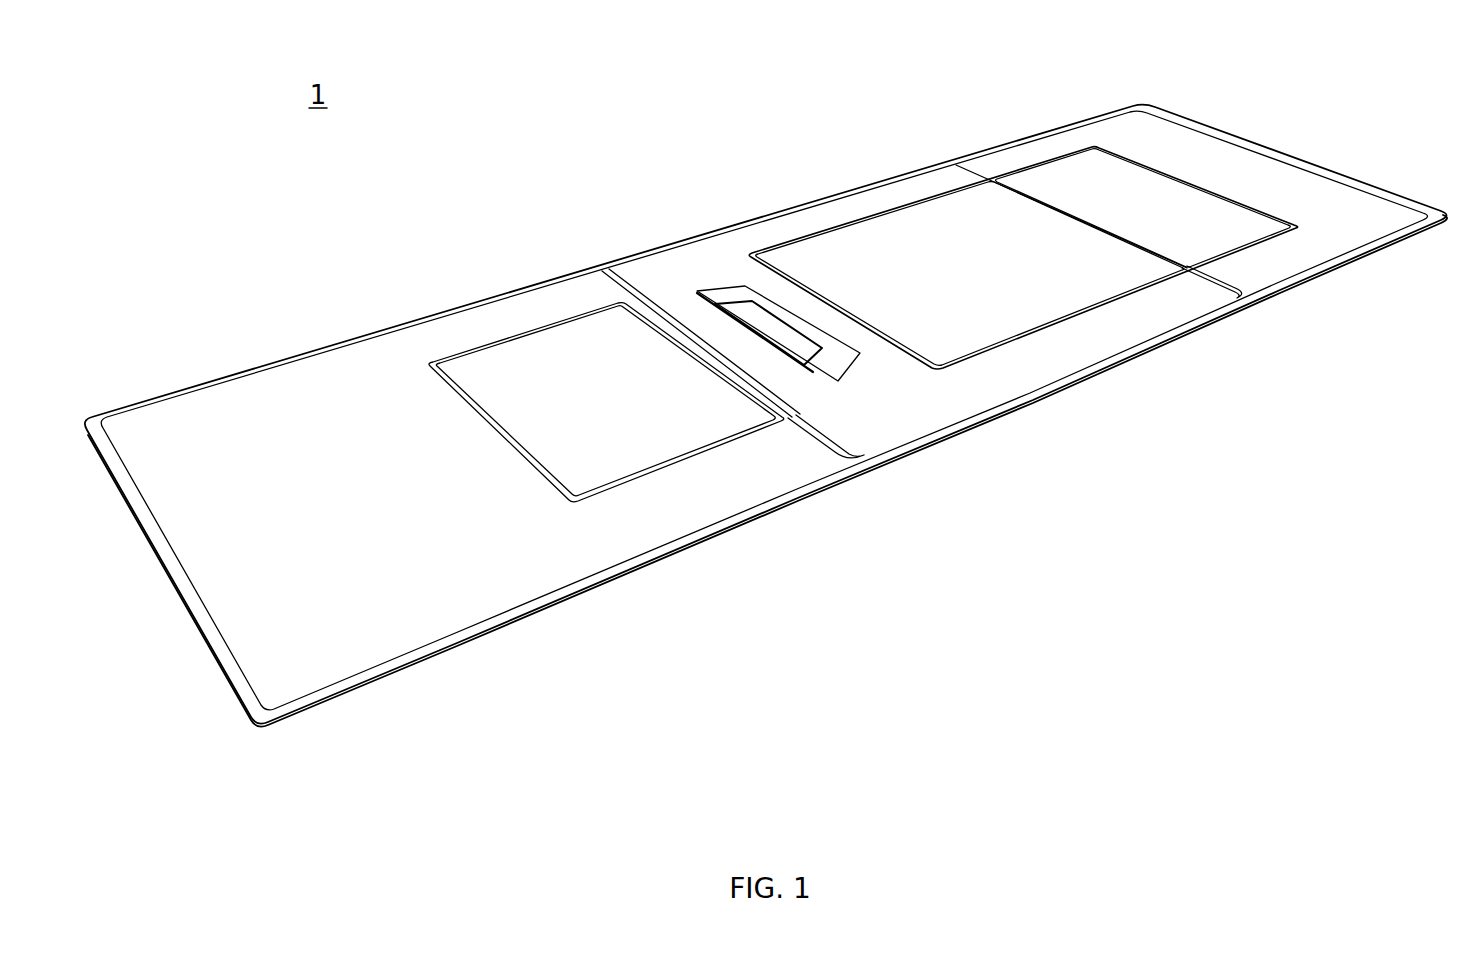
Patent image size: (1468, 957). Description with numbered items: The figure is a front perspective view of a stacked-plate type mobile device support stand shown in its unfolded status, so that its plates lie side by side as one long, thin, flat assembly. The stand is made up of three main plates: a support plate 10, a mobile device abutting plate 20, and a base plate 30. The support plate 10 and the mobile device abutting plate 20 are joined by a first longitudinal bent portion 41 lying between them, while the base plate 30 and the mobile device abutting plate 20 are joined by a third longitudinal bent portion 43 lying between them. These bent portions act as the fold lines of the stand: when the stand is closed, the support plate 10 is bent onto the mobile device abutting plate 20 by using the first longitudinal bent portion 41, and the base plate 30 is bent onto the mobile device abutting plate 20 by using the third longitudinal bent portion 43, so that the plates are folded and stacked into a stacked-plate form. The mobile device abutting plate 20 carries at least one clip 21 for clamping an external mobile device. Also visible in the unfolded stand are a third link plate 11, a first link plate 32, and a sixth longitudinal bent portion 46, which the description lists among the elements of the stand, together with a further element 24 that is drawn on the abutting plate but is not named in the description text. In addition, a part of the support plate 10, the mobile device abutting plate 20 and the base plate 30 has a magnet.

The support plate 10 is at (1270, 165).
The third link plate 11 is at (1125, 200).
The mobile device abutting plate 20 is at (905, 410).
The clip 21 is at (823, 370).
The recess 24 is at (960, 300).
The base plate 30 is at (345, 655).
The first link plate 32 is at (603, 450).
The first longitudinal bent portion 41 is at (943, 163).
The third longitudinal bent portion 43 is at (750, 470).
The sixth longitudinal bent portion 46 is at (1063, 210).